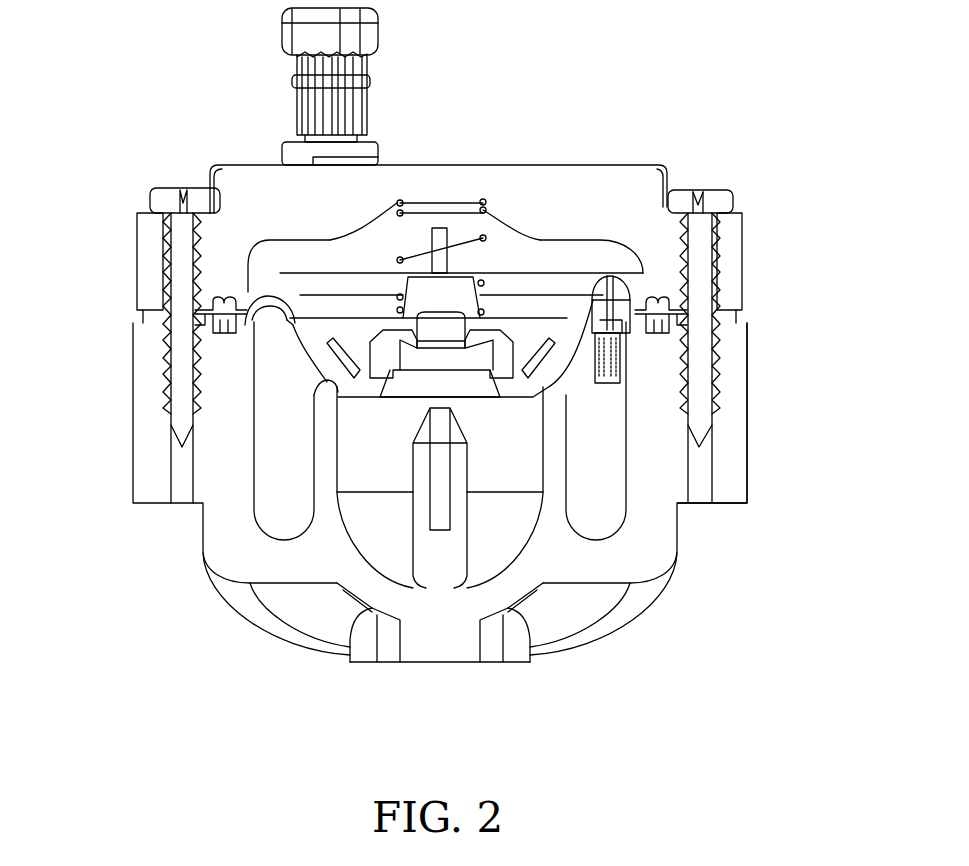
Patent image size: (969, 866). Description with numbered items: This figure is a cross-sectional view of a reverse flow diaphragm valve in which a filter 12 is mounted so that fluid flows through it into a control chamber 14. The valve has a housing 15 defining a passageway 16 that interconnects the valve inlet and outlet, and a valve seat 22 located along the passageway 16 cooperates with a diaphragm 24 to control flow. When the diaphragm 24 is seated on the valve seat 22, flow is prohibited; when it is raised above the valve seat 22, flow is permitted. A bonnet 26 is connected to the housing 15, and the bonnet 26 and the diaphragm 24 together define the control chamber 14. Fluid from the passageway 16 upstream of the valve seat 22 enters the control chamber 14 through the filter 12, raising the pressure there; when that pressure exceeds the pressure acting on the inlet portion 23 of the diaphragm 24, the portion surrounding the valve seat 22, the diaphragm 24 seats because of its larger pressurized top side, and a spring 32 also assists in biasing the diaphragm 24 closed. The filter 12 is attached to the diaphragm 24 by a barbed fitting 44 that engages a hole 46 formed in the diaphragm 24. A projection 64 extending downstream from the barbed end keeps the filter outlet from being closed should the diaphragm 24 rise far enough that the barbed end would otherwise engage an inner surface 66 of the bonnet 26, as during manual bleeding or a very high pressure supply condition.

The filter 12 is at (620, 356).
The control chamber 14 is at (548, 252).
The housing 15 is at (748, 447).
The passageway 16 is at (607, 440).
The valve seat 22 is at (338, 387).
The inlet portion 23 is at (287, 323).
The diaphragm 24 is at (290, 292).
The bonnet 26 is at (508, 165).
The spring 32 is at (428, 205).
The barbed fitting 44 is at (618, 290).
The hole 46 is at (600, 298).
The projection 64 is at (645, 216).
The inner surface 66 is at (600, 278).